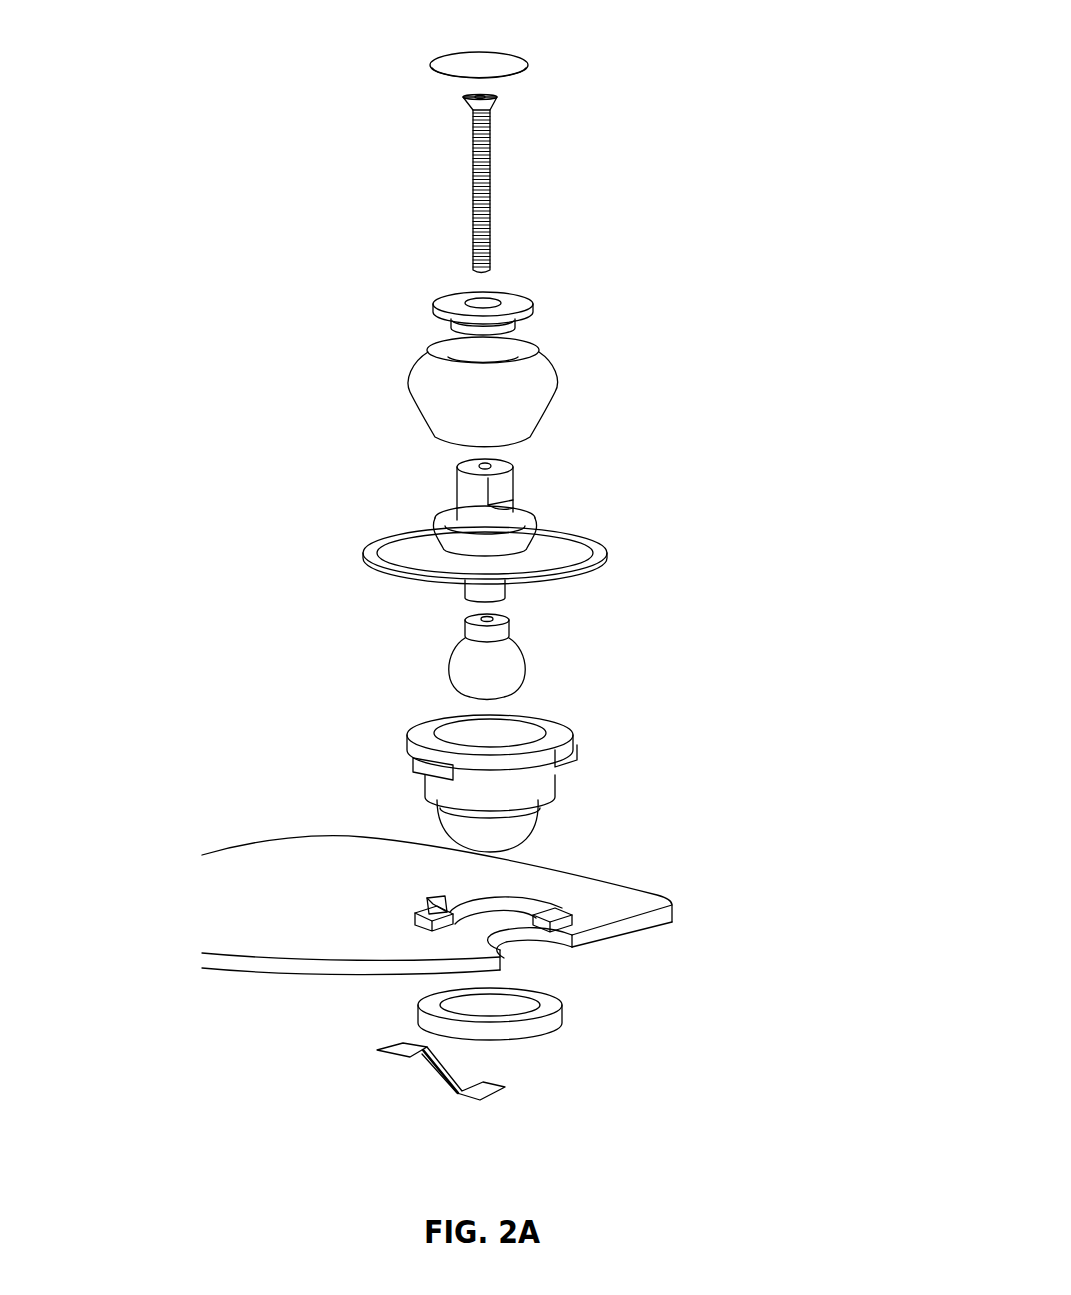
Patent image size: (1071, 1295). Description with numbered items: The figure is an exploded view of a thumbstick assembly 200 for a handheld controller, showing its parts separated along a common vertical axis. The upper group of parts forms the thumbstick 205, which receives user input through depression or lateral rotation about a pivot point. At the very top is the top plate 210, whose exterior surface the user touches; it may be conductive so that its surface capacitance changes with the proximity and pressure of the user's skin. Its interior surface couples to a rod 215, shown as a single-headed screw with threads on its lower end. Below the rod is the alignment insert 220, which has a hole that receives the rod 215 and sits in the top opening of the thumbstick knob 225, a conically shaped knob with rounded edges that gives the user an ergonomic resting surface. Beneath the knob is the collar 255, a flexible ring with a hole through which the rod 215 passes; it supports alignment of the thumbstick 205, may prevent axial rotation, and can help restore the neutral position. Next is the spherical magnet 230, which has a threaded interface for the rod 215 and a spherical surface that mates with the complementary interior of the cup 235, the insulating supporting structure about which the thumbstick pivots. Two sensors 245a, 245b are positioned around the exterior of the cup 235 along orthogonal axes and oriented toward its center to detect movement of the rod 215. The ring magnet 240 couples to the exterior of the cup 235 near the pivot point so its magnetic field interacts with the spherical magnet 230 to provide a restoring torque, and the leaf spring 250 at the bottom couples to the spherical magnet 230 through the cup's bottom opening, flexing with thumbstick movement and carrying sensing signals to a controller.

The thumbstick assembly 200 is at (321, 37).
The thumbstick 205 is at (780, 45).
The top plate 210 is at (517, 63).
The rod 215 is at (490, 175).
The alignment insert 220 is at (513, 308).
The thumbstick knob 225 is at (525, 398).
The spherical magnet 230 is at (502, 650).
The cup 235 is at (423, 732).
The ring magnet 240 is at (553, 1020).
The sensor 245a is at (417, 923).
The sensor 245b is at (557, 910).
The leaf spring 250 is at (432, 1073).
The collar 255 is at (395, 552).